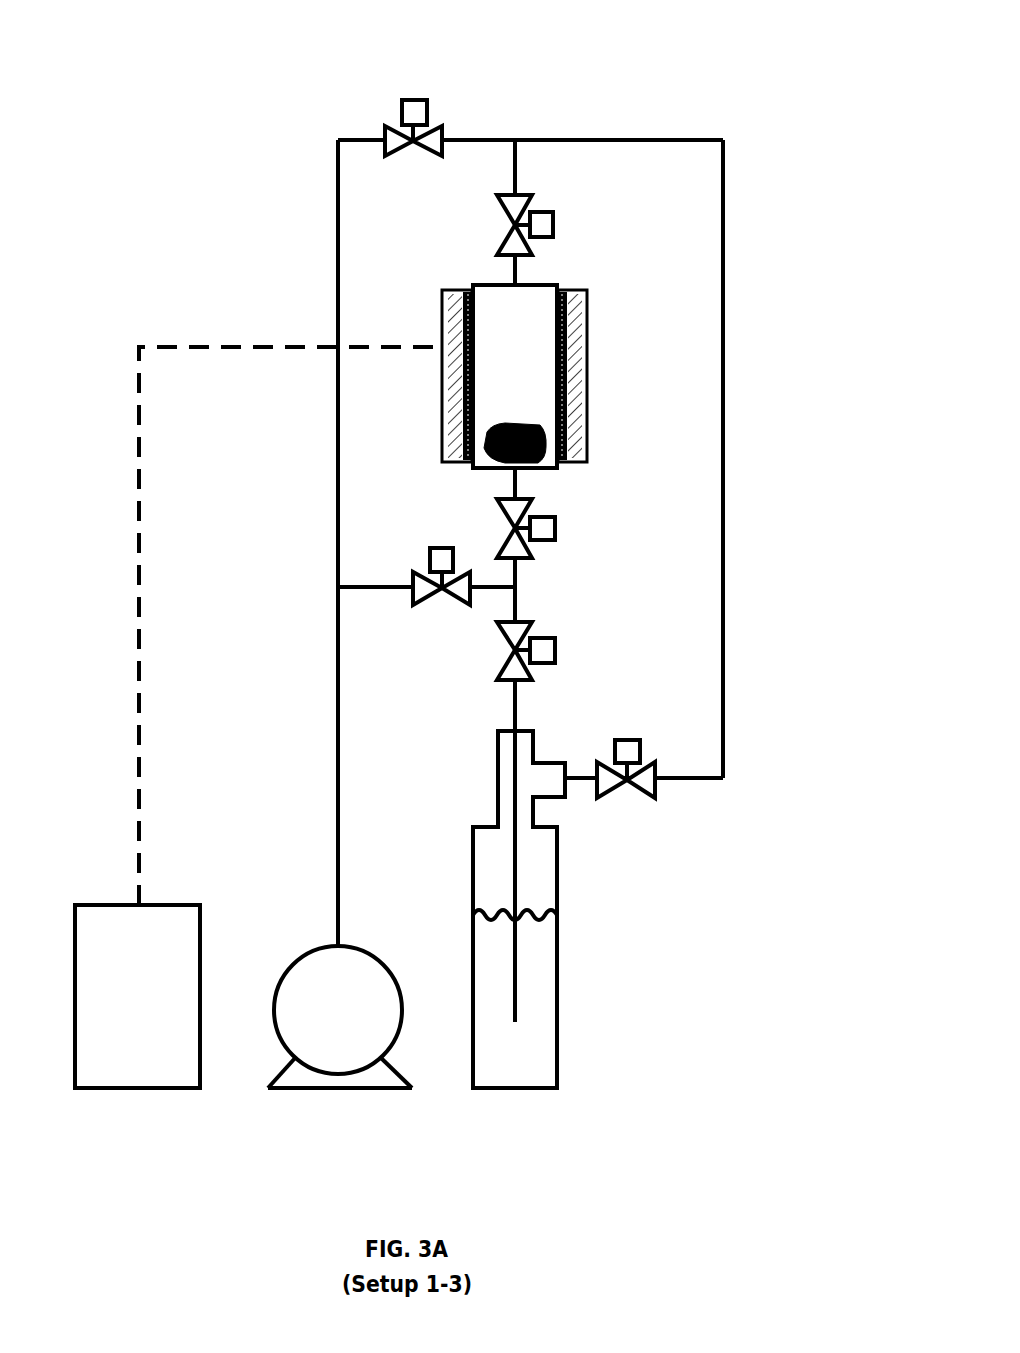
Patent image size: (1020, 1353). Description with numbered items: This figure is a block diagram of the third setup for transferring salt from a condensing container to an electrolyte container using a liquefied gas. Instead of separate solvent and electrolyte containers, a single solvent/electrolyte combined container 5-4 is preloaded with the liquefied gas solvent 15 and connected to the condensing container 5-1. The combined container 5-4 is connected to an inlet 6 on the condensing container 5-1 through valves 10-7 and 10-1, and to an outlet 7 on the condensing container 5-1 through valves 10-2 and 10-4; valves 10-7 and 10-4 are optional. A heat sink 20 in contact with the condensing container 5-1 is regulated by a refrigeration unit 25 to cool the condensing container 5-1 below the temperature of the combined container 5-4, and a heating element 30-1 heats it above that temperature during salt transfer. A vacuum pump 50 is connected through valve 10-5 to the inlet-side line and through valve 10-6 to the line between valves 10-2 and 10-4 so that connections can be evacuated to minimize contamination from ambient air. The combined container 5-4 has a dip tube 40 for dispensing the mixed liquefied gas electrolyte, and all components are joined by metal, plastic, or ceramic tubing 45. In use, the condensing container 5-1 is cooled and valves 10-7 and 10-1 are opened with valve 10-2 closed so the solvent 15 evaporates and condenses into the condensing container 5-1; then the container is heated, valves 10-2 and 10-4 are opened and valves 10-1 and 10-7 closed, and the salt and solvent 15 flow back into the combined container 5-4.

The valve 10-5 is at (415, 97).
The valve 10-1 is at (552, 212).
The valve 10-2 is at (555, 520).
The valve 10-4 is at (555, 647).
The valve 10-6 is at (447, 593).
The valve 10-7 is at (633, 788).
The inlet 6 is at (512, 283).
The outlet 7 is at (510, 468).
The condensing container 5-1 is at (543, 283).
The heating element 30-1 is at (580, 332).
The heat sink 20 is at (575, 402).
The tubing 45 is at (722, 387).
The dip tube 40 is at (517, 765).
The solvent/electrolyte combined container 5-4 is at (557, 897).
The liquefied gas solvent 15 is at (547, 1043).
The refrigeration unit 25 is at (200, 927).
The vacuum pump 50 is at (353, 948).